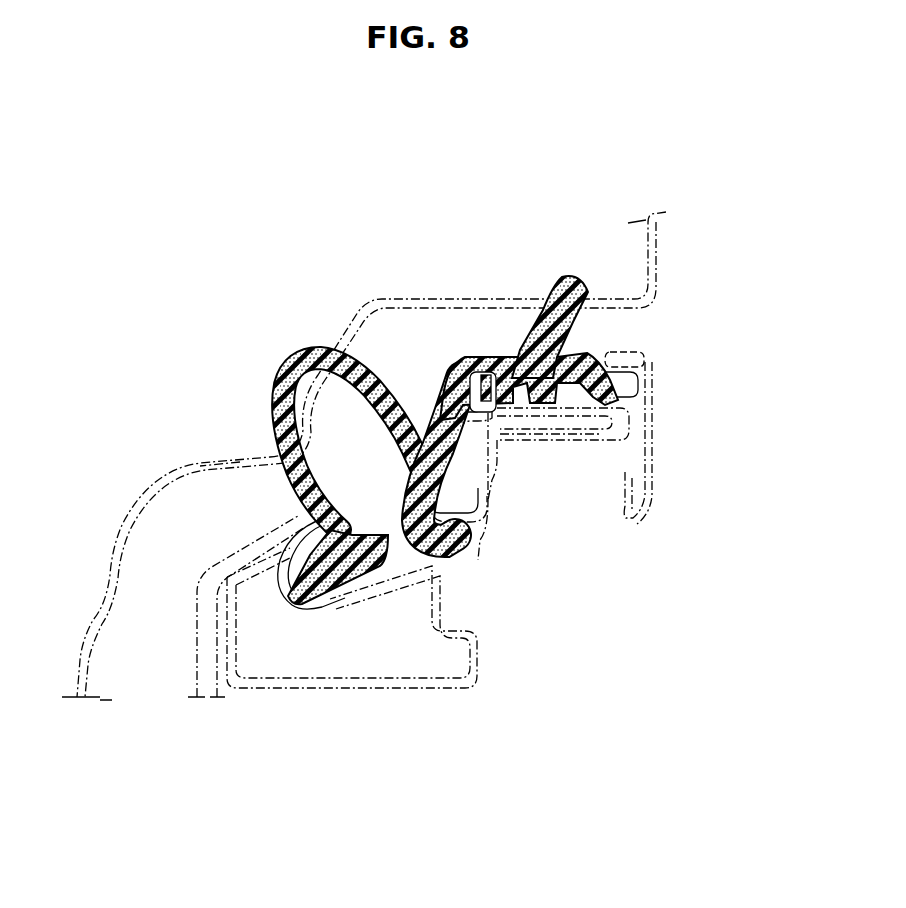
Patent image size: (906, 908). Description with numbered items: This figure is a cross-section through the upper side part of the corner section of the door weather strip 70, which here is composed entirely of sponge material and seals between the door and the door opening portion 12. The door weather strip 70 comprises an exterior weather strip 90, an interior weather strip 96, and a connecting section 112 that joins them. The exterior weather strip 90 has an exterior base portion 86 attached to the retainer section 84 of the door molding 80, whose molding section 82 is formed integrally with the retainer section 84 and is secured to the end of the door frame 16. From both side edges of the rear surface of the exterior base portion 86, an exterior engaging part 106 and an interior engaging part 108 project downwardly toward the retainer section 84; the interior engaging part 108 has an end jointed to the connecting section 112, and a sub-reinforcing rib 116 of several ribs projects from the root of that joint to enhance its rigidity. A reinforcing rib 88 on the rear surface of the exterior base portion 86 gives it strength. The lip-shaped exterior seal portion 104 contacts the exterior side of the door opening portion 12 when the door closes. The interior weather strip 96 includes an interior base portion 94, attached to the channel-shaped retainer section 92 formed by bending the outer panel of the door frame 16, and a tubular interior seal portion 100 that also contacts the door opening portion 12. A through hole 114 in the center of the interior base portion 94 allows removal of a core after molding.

The door opening portion 12 is at (505, 299).
The door frame 16 is at (254, 692).
The door weather strip 70 is at (284, 508).
The door molding 80 is at (654, 473).
The molding section 82 is at (652, 430).
The retainer section 84 is at (565, 412).
The exterior base portion 86 is at (640, 352).
The reinforcing rib 88 is at (533, 416).
The exterior weather strip 90 is at (457, 503).
The channel-shaped retainer section 92 is at (290, 607).
The interior base portion 94 is at (337, 585).
The interior weather strip 96 is at (274, 433).
The interior seal portion 100 is at (300, 352).
The exterior seal portion 104 is at (583, 278).
The exterior engaging part 106 is at (600, 387).
The interior engaging part 108 is at (497, 408).
The connecting section 112 is at (447, 380).
The through hole 114 is at (403, 542).
The sub-reinforcing rib 116 is at (485, 362).